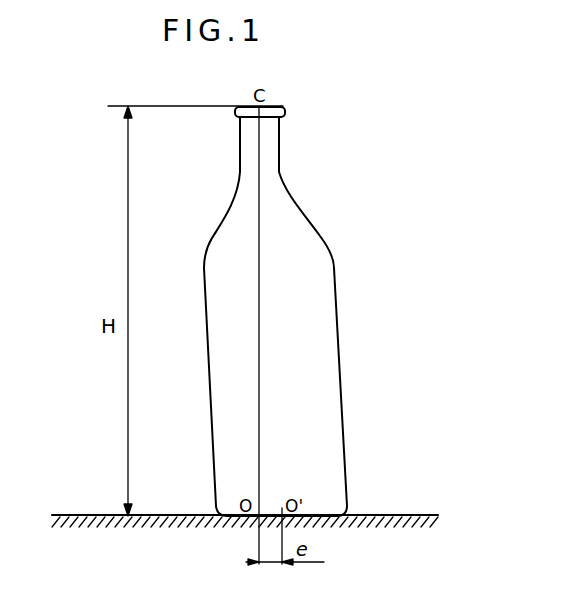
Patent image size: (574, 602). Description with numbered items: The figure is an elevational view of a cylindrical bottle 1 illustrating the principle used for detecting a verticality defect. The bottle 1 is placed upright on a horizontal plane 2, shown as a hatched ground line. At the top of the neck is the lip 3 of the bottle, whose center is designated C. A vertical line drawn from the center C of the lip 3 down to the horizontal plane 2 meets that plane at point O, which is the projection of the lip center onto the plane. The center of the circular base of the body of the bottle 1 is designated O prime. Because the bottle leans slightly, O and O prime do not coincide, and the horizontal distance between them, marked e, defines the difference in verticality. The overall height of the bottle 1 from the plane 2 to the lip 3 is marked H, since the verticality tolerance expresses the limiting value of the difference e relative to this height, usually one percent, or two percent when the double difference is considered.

The cylindrical bottle 1 is at (318, 373).
The horizontal plane 2 is at (399, 515).
The lip 3 is at (273, 116).